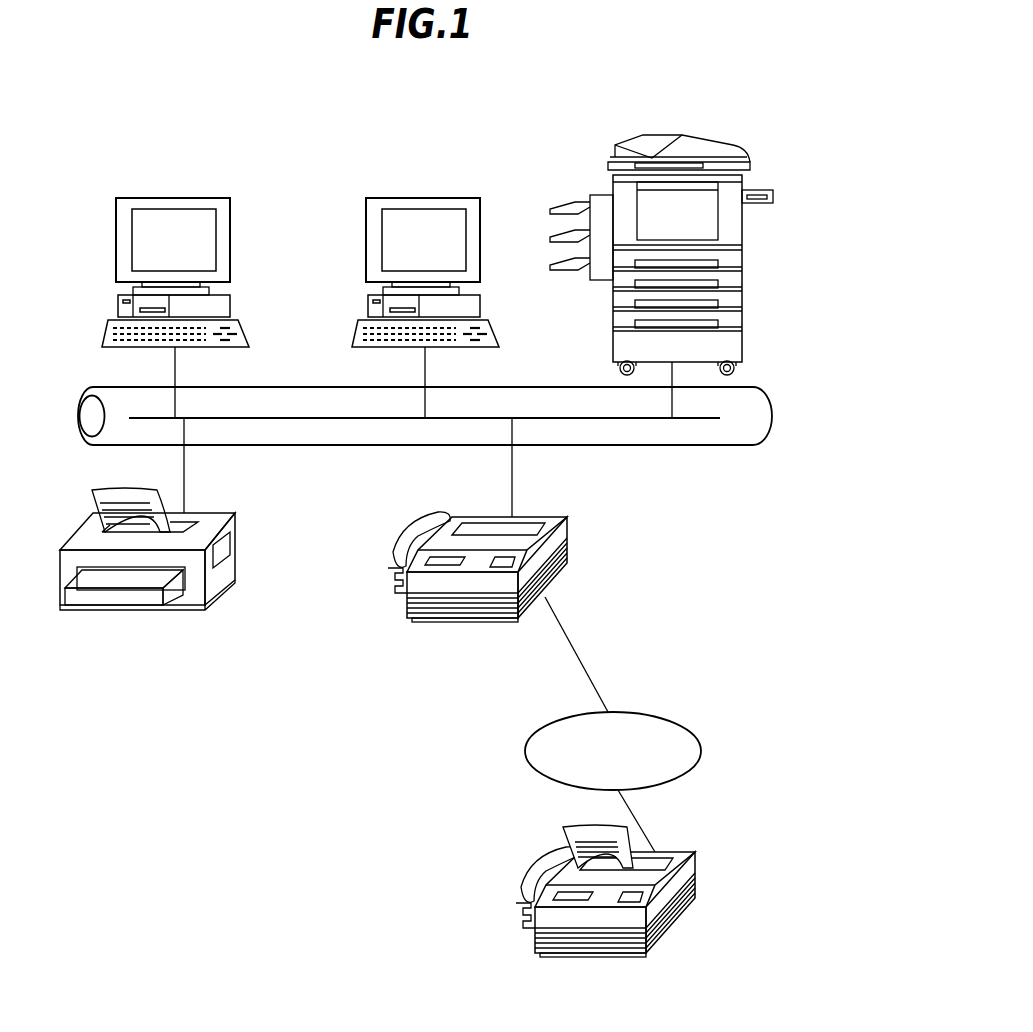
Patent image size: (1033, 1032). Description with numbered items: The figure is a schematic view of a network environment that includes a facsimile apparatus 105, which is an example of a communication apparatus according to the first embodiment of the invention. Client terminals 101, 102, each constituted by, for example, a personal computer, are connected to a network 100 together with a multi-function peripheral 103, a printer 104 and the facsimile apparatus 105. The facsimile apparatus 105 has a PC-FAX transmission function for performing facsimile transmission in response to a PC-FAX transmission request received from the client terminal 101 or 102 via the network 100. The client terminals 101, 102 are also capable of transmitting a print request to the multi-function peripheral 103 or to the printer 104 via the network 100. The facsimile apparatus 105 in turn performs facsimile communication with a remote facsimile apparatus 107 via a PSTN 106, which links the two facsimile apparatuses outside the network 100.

The network 100 is at (679, 445).
The client terminal 101 is at (167, 198).
The client terminal 102 is at (432, 198).
The multi-function peripheral 103 is at (710, 150).
The printer 104 is at (148, 610).
The facsimile apparatus 105 is at (453, 622).
The PSTN 106 is at (650, 712).
The facsimile apparatus 107 is at (700, 868).